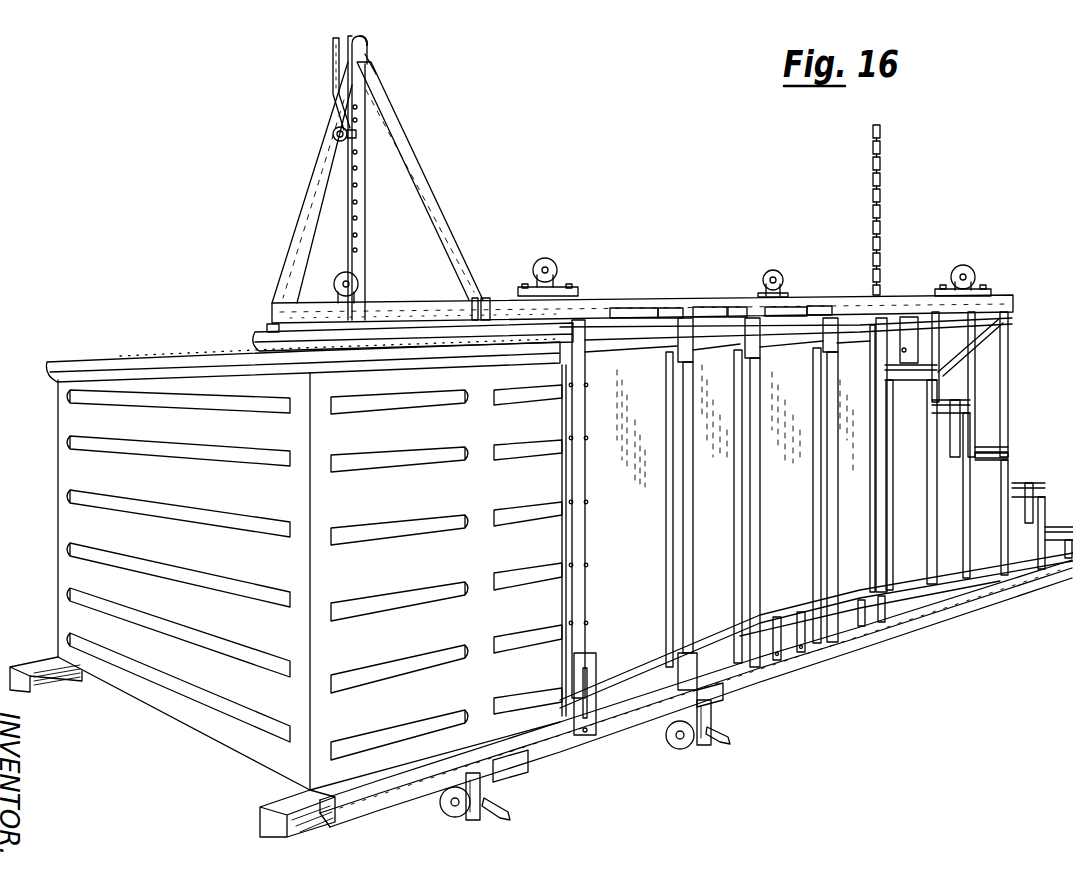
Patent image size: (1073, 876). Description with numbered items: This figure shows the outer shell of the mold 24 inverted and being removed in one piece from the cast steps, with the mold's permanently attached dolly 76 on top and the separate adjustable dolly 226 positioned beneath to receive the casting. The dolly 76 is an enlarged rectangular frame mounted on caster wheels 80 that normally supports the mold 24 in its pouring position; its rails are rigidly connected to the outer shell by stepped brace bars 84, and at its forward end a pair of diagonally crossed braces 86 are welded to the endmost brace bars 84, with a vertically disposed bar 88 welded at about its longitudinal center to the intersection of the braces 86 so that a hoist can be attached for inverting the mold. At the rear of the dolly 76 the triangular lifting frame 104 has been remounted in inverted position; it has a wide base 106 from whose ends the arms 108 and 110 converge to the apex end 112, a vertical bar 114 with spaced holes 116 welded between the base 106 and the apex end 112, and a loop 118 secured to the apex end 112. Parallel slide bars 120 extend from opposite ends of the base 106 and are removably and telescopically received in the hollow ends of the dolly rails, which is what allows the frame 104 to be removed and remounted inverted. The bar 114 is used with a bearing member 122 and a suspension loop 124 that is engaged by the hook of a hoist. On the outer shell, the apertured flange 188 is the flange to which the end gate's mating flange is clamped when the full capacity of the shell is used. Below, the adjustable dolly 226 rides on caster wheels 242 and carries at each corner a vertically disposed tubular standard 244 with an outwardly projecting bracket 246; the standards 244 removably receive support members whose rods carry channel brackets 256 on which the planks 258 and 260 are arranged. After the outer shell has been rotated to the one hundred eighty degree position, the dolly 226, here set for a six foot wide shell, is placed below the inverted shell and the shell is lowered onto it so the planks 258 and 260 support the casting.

The mold 24 is at (55, 420).
The dolly means 76 is at (626, 295).
The caster wheels 80 is at (556, 256).
The stepped brace bars 84 is at (1008, 323).
The diagonally crossed braces 86 is at (983, 330).
The vertically disposed bar 88 is at (900, 317).
The triangular lifting frame 104 is at (410, 130).
The wide base 106 is at (400, 303).
The arm 108 is at (312, 176).
The arm 110 is at (425, 170).
The apex end 112 is at (370, 70).
The vertical bar 114 is at (368, 215).
The spaced holes 116 is at (366, 252).
The loop 118 is at (367, 46).
The slide bars 120 is at (484, 297).
The bearing member 122 is at (334, 134).
The suspension loop 124 is at (333, 70).
The apertured flange 188 is at (270, 325).
The adjustable dolly 226 is at (620, 752).
The caster wheels 242 is at (442, 816).
The tubular standard 244 is at (472, 820).
The bracket 246 is at (507, 813).
The channel bracket 256 is at (523, 763).
The plank 258 is at (53, 683).
The plank 260 is at (273, 806).